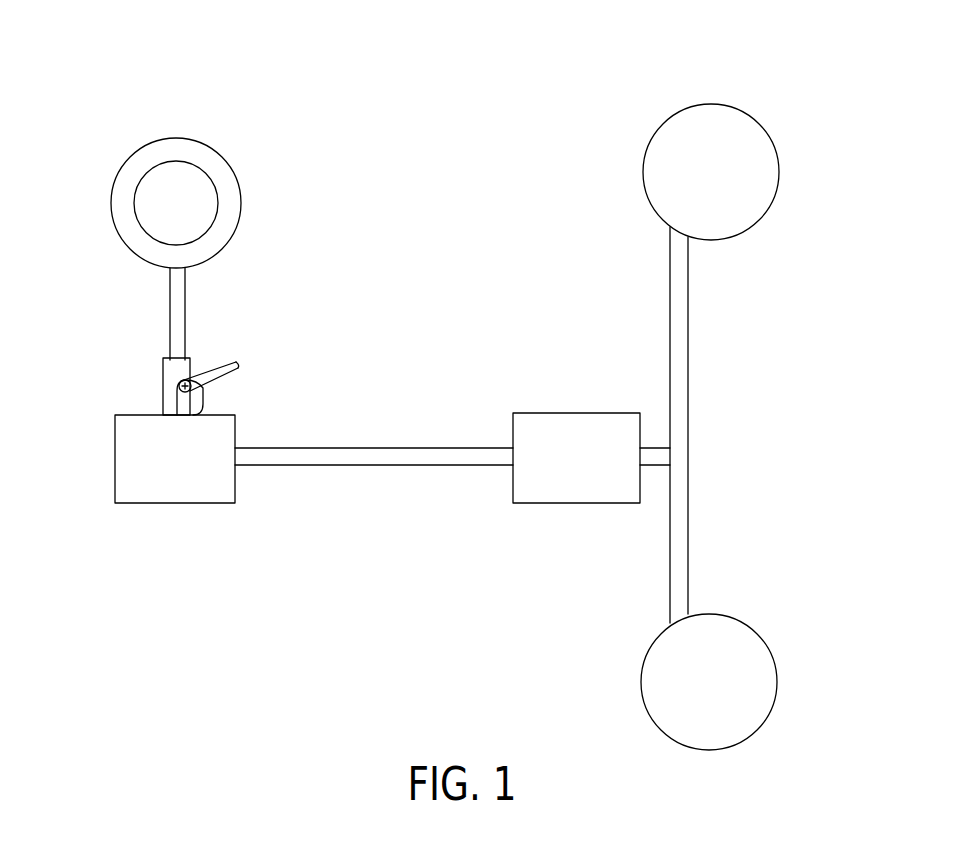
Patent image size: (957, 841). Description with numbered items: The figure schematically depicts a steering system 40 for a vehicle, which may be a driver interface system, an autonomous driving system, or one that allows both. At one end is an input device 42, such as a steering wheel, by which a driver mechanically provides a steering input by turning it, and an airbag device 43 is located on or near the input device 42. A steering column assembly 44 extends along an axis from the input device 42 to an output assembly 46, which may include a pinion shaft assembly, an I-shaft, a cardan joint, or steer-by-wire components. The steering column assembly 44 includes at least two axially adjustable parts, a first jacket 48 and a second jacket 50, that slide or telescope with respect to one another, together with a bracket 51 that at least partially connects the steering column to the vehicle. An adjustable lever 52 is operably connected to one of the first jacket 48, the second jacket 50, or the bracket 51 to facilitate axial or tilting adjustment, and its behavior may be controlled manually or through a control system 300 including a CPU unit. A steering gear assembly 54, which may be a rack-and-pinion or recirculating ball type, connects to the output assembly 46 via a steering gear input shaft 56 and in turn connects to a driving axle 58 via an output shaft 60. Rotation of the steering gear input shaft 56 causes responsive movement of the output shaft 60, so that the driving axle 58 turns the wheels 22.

The steering system 40 is at (836, 84).
The input device 42 is at (112, 200).
The airbag device 43 is at (255, 247).
The steering column assembly 44 is at (98, 324).
The first jacket 48 is at (157, 300).
The second jacket 50 is at (150, 394).
The bracket 51 is at (206, 407).
The adjustable lever 52 is at (250, 346).
The control system 300 is at (192, 358).
The output assembly 46 is at (164, 474).
The steering gear input shaft 56 is at (470, 448).
The steering gear assembly 54 is at (566, 474).
The output shaft 60 is at (661, 448).
The driving axle 58 is at (682, 505).
The wheels 22 is at (738, 232).